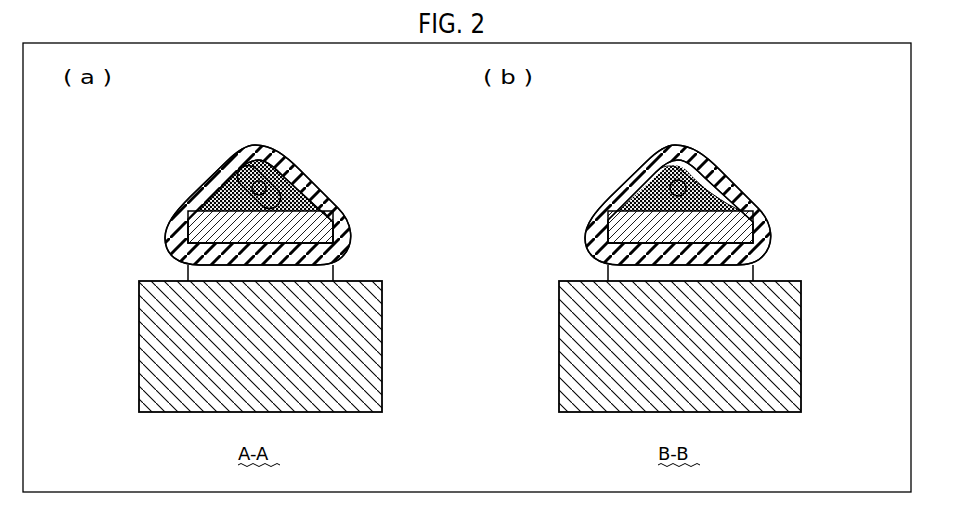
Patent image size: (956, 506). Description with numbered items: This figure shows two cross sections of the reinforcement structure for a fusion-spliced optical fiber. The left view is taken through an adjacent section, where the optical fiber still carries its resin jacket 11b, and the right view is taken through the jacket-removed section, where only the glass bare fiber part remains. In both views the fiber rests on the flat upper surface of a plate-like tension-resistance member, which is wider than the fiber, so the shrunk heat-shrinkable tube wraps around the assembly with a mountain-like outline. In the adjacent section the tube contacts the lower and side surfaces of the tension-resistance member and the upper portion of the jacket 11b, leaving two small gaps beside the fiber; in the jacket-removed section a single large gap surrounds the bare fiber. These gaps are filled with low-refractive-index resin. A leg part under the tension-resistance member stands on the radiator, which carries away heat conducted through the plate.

The jacket 11b is at (270, 182).